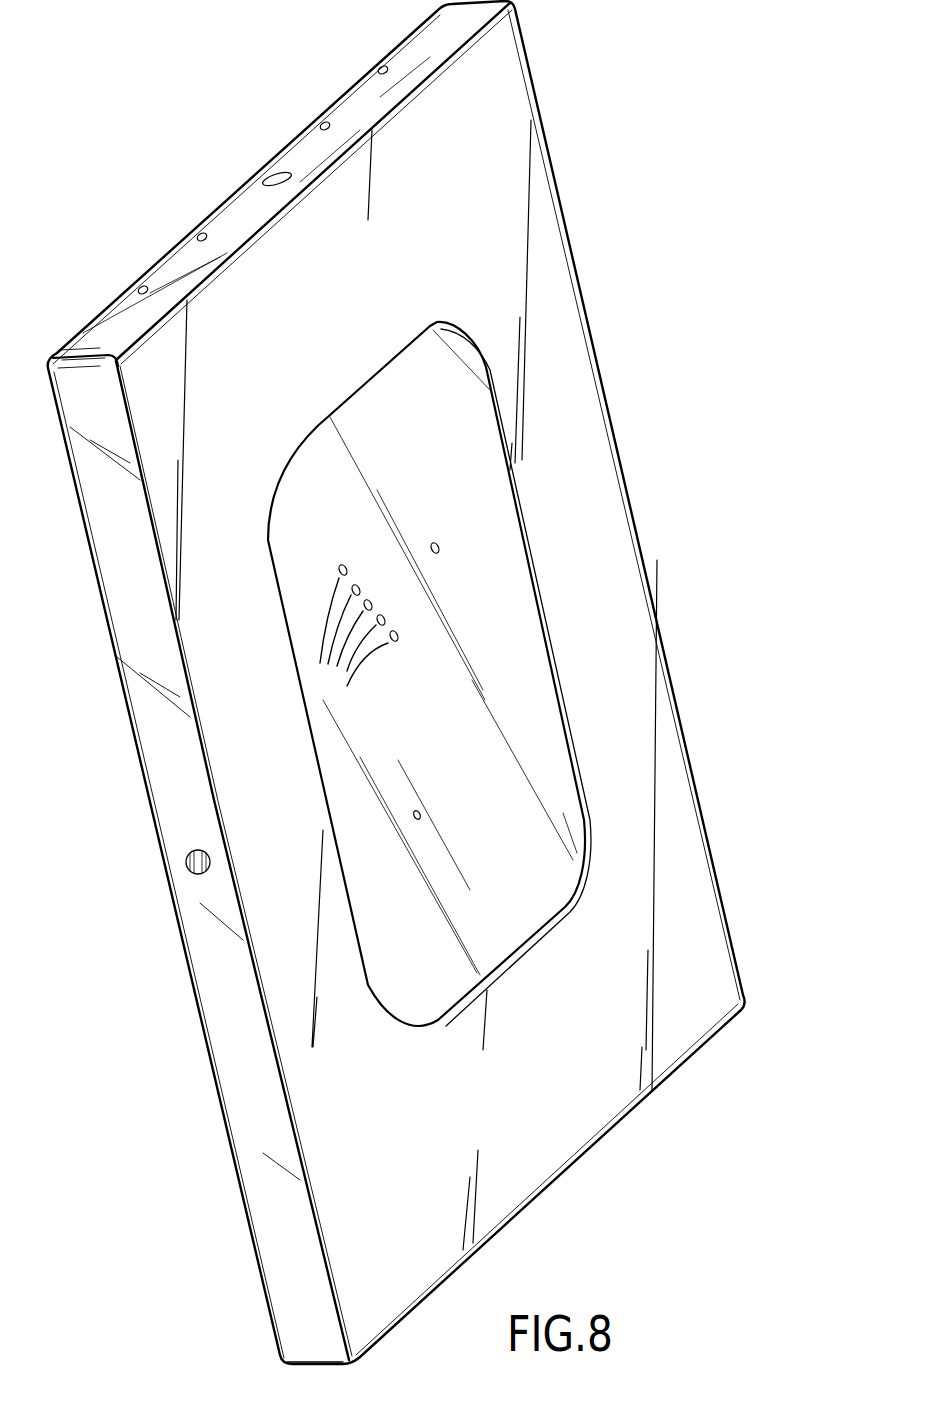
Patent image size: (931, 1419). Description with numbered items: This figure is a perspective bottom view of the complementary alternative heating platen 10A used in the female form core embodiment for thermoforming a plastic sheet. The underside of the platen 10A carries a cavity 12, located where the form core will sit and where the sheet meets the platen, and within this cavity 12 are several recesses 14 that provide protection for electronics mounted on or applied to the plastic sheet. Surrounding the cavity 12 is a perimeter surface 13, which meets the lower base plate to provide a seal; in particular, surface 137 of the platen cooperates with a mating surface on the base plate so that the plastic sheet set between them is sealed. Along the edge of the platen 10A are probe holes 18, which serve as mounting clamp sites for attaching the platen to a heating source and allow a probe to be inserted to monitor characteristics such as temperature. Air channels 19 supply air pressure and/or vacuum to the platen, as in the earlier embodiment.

The alternative platen 10A is at (413, 682).
The cavity 12 is at (410, 766).
The perimeter surface 13 is at (412, 283).
The recesses 14 is at (438, 544).
The probe holes 18 is at (140, 285).
The air pressure channels 19 is at (282, 170).
The surface 137 is at (515, 86).